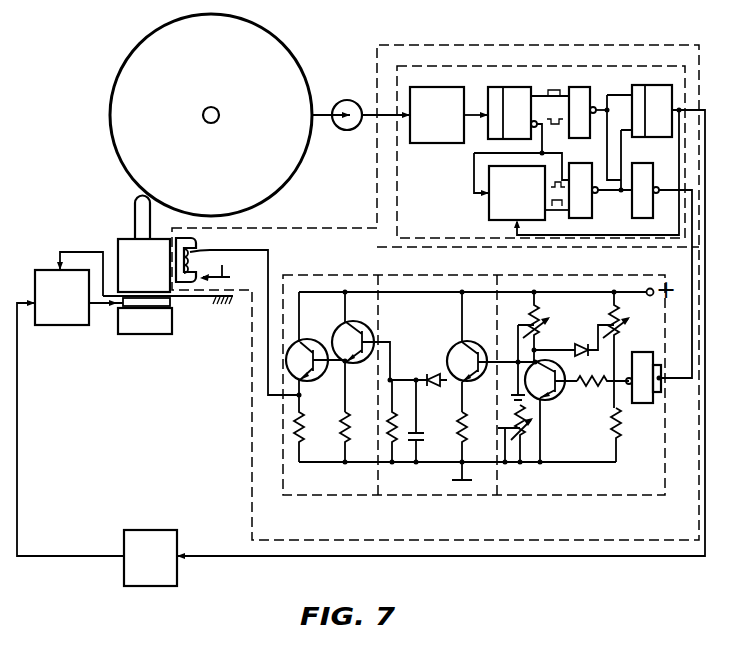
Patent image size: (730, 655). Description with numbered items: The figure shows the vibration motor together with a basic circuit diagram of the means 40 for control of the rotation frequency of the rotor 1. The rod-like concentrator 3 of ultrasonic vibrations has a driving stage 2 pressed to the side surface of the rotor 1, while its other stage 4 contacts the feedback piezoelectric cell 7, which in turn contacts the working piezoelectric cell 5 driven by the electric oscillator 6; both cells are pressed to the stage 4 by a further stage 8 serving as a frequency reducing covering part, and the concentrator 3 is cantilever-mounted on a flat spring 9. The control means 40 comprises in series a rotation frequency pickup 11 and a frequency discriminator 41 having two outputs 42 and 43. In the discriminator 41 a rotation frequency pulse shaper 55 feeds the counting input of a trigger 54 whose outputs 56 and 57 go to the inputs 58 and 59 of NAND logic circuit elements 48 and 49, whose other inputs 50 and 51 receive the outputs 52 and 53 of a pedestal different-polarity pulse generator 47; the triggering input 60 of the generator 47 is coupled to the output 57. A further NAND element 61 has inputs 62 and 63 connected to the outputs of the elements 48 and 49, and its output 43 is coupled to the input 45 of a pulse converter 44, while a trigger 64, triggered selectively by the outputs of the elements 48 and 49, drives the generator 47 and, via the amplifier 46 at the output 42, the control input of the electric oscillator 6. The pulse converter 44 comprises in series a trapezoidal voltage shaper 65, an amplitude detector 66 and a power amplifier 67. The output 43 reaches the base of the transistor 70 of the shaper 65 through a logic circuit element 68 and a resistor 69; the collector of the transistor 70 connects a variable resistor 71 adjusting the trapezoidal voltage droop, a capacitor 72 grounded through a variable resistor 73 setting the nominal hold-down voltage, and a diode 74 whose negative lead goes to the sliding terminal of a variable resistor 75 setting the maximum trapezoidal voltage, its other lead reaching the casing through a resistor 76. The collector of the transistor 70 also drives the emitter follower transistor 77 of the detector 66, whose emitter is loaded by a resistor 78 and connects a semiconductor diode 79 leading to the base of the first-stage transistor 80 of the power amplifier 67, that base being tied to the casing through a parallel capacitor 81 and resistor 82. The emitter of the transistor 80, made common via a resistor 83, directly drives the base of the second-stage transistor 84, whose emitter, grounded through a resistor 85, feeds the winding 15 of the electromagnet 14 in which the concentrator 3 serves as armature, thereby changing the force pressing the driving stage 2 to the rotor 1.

The rotor 1 is at (111, 100).
The driving stage 2 is at (141, 212).
The concentrator of ultrasonic vibrations 3 is at (114, 230).
The stage 4 is at (118, 258).
The working piezoelectric cell 5 is at (160, 302).
The electric oscillator 6 is at (62, 297).
The feed-back piezoelectric cell 7 is at (128, 306).
The stage 8 is at (150, 334).
The flat spring 9 is at (208, 300).
The rotation frequency pickup 11 is at (349, 100).
The electromagnet 14 is at (225, 274).
The winding 15 is at (200, 254).
The means for control of rotation frequency 40 is at (252, 394).
The frequency discriminator 41 is at (508, 66).
The output 42 is at (680, 110).
The output 43 is at (692, 200).
The pulse converter 44 is at (414, 496).
The input 45 is at (662, 389).
The amplifier 46 is at (150, 558).
The pedestal different-polarity pulse generator 47 is at (517, 193).
The NAND logic circuit element 48 is at (592, 98).
The NAND logic circuit element 49 is at (590, 205).
The input 50 is at (559, 140).
The input 51 is at (570, 214).
The output 52 is at (564, 175).
The output 53 is at (566, 213).
The trigger 54 is at (515, 86).
The rotation frequency pulse shaper 55 is at (437, 115).
The output 56 is at (550, 79).
The output 57 is at (547, 127).
The input 58 is at (569, 88).
The input 59 is at (581, 176).
The triggering input 60 is at (474, 197).
The NAND logic circuit element 61 is at (653, 180).
The input 62 is at (622, 178).
The input 63 is at (633, 211).
The trigger 64 is at (656, 85).
The trapezoidal voltage shaper 65 is at (606, 494).
The amplitude detector 66 is at (488, 498).
The power amplifier 67 is at (325, 495).
The logic circuit element 68 is at (655, 354).
The resistor 69 is at (590, 386).
The transistor 70 is at (545, 400).
The variable resistor 71 is at (533, 313).
The capacitor 72 is at (512, 362).
The variable resistor 73 is at (522, 437).
The diode 74 is at (580, 345).
The variable resistor 75 is at (624, 323).
The resistor 76 is at (620, 433).
The emitter follower transistor 77 is at (470, 341).
The resistor 78 is at (464, 428).
The semiconductor diode 79 is at (434, 373).
The first-stage transistor 80 is at (370, 328).
The capacitor 81 is at (420, 432).
The resistor 82 is at (400, 421).
The resistor 83 is at (355, 421).
The second-stage transistor 84 is at (313, 342).
The resistor 85 is at (312, 421).